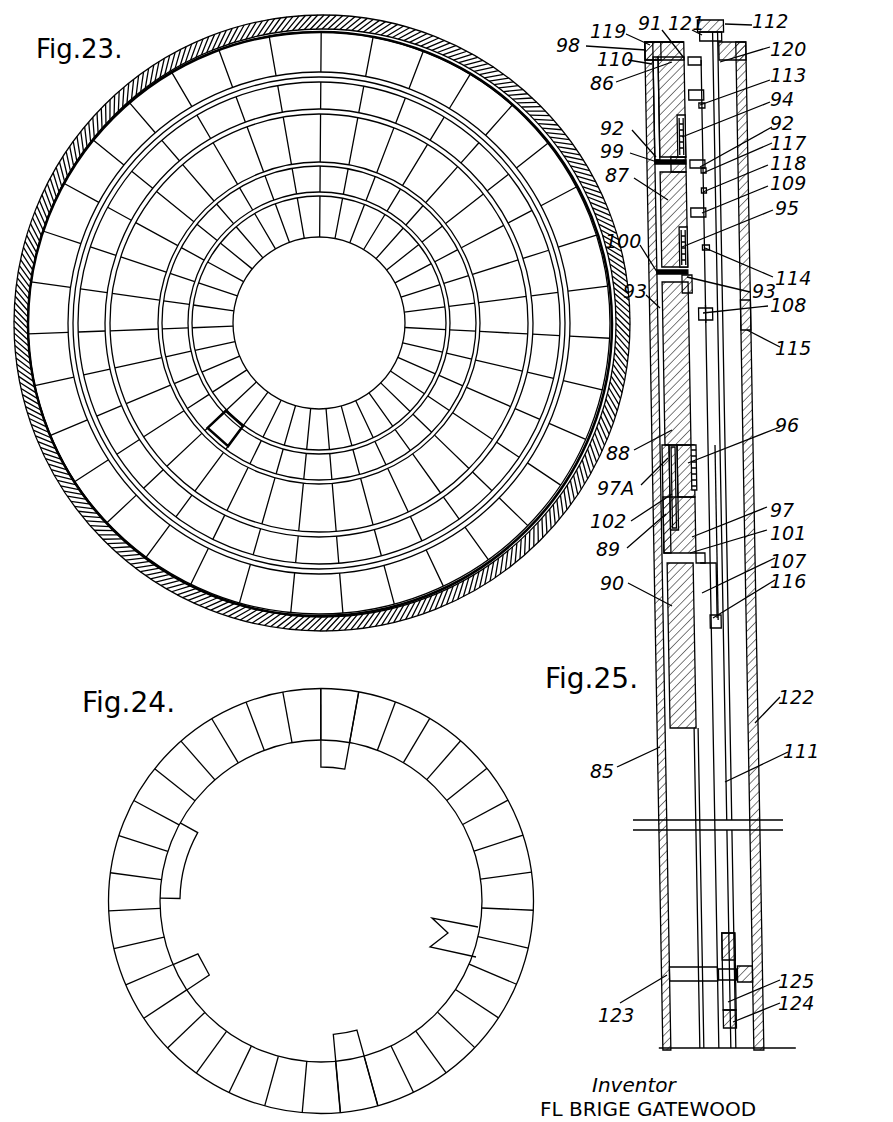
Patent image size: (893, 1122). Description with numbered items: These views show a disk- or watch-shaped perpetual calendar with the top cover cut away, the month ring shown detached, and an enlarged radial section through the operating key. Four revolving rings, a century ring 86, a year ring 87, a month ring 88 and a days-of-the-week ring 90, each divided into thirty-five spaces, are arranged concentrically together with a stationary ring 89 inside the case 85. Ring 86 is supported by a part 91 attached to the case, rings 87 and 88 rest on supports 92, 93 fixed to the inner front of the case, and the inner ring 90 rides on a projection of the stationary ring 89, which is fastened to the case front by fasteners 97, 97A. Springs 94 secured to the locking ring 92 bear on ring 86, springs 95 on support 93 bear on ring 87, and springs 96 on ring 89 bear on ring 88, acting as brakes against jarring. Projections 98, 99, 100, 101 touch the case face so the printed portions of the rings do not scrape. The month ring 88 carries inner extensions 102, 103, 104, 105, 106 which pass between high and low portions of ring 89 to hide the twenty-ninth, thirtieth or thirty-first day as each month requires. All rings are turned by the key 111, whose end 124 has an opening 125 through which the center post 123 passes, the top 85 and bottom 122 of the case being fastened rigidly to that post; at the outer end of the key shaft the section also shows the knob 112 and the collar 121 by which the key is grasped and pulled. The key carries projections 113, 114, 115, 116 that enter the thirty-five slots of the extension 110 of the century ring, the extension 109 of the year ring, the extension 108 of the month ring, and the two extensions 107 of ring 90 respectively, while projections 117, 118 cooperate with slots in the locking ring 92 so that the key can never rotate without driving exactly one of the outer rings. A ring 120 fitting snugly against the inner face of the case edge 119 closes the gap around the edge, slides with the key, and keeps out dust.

In FIG. 25, the case 85 is at (673, 546).
In FIG. 23, the century ring 86 is at (77, 183).
In FIG. 25, the century ring 86 is at (672, 107).
In FIG. 23, the year ring 87 is at (80, 187).
In FIG. 25, the year ring 87 is at (674, 219).
In FIG. 23, the month ring 88 is at (453, 492).
In FIG. 24, the month ring 88 is at (492, 808).
In FIG. 25, the month ring 88 is at (676, 363).
In FIG. 23, the stationary ring 89 is at (421, 471).
In FIG. 25, the stationary ring 89 is at (679, 525).
In FIG. 23, the days of the week ring 90 is at (243, 341).
In FIG. 25, the days of the week ring 90 is at (685, 805).
In FIG. 25, the support 91 is at (722, 426).
In FIG. 23, the locking ring 92 is at (490, 79).
In FIG. 25, the locking ring 92 is at (688, 164).
In FIG. 25, the support 93 is at (687, 284).
In FIG. 25, the springs 94 is at (681, 136).
In FIG. 25, the springs 95 is at (683, 247).
In FIG. 25, the springs 96 is at (694, 467).
In FIG. 25, the fastener 97 is at (697, 532).
In FIG. 25, the fastener 97A is at (669, 499).
In FIG. 25, the projection 98 is at (653, 51).
In FIG. 25, the projection 99 is at (670, 162).
In FIG. 25, the projection 100 is at (672, 272).
In FIG. 25, the projection 101 is at (700, 558).
In FIG. 24, the inner extension 102 is at (203, 972).
In FIG. 25, the inner extension 102 is at (674, 487).
In FIG. 24, the inner extension 103 is at (340, 1038).
In FIG. 24, the inner extension 104 is at (437, 937).
In FIG. 23, the inner extension 105 is at (212, 436).
In FIG. 24, the inner extension 105 is at (330, 770).
In FIG. 24, the inner extension 106 is at (178, 868).
In FIG. 25, the extensions 107 is at (708, 590).
In FIG. 25, the extension 108 is at (705, 314).
In FIG. 25, the extension 109 is at (698, 212).
In FIG. 25, the extension 110 is at (656, 108).
In FIG. 25, the key 111 is at (718, 554).
In FIG. 25, the knob 112 is at (710, 26).
In FIG. 25, the projection 113 is at (696, 82).
In FIG. 25, the projection 114 is at (705, 247).
In FIG. 25, the projection 115 is at (745, 315).
In FIG. 25, the projection 116 is at (715, 621).
In FIG. 25, the projection 117 is at (703, 170).
In FIG. 25, the projection 118 is at (703, 190).
In FIG. 23, the edge 119 is at (457, 44).
In FIG. 25, the ring 120 is at (732, 51).
In FIG. 25, the collar 121 is at (711, 36).
In FIG. 25, the bottom 122 is at (750, 546).
In FIG. 25, the center post 123 is at (710, 974).
In FIG. 25, the end 124 is at (729, 1019).
In FIG. 25, the opening 125 is at (729, 971).